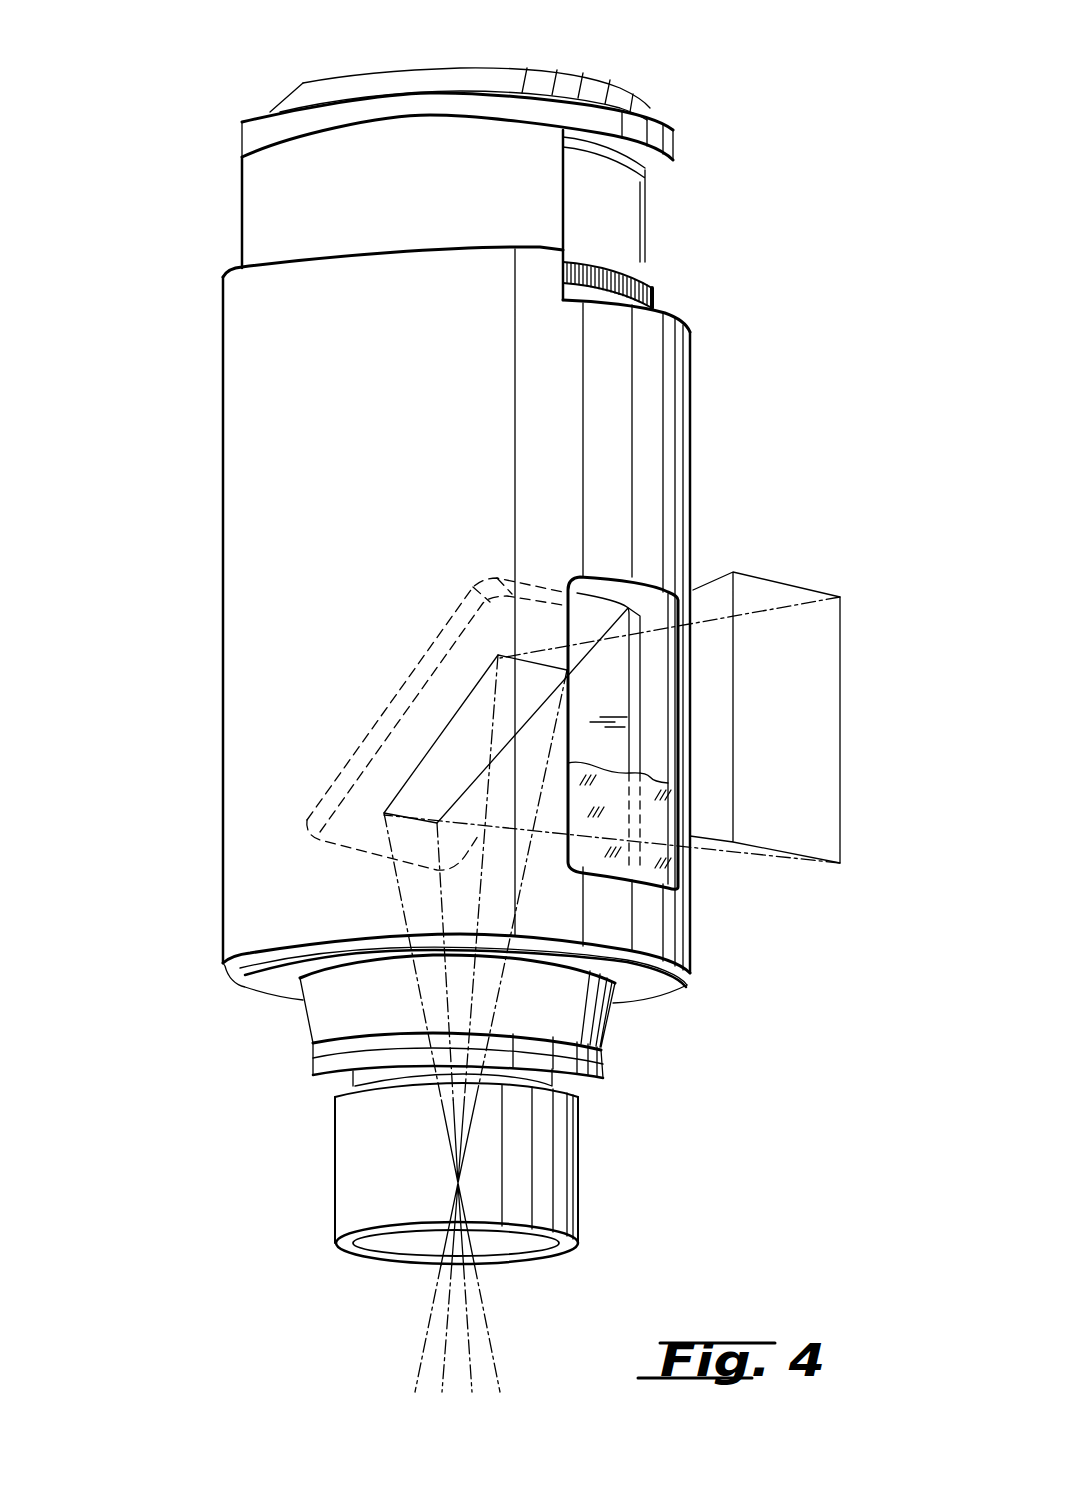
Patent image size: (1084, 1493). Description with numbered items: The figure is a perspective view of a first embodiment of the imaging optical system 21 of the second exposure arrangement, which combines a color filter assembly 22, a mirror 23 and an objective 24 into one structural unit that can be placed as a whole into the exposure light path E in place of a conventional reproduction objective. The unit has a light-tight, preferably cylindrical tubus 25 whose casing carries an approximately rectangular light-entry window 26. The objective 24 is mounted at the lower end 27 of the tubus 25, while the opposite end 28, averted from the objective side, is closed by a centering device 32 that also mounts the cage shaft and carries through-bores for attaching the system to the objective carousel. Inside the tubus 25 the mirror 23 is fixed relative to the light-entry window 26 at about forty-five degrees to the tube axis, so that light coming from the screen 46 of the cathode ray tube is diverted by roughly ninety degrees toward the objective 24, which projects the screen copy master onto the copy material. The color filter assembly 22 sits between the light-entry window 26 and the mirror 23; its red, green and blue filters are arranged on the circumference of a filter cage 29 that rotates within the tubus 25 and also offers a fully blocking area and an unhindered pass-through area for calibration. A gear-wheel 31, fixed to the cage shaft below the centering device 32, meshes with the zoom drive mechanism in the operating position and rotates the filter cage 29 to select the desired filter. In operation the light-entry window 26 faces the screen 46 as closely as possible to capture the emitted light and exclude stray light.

The imaging optical system 21 is at (152, 226).
The color filter assembly 22 is at (660, 873).
The mirror 23 is at (423, 668).
The objective 24 is at (343, 1168).
The tubus 25 is at (252, 387).
The light-entry window 26 is at (683, 617).
The lower end of the tubus 27 is at (237, 975).
The end of the tubus 28 is at (265, 116).
The filter cage 29 is at (607, 587).
The gear-wheel 31 is at (655, 299).
The centering device 32 is at (447, 78).
The screen 46 is at (820, 778).
The exposure light path E is at (437, 1363).